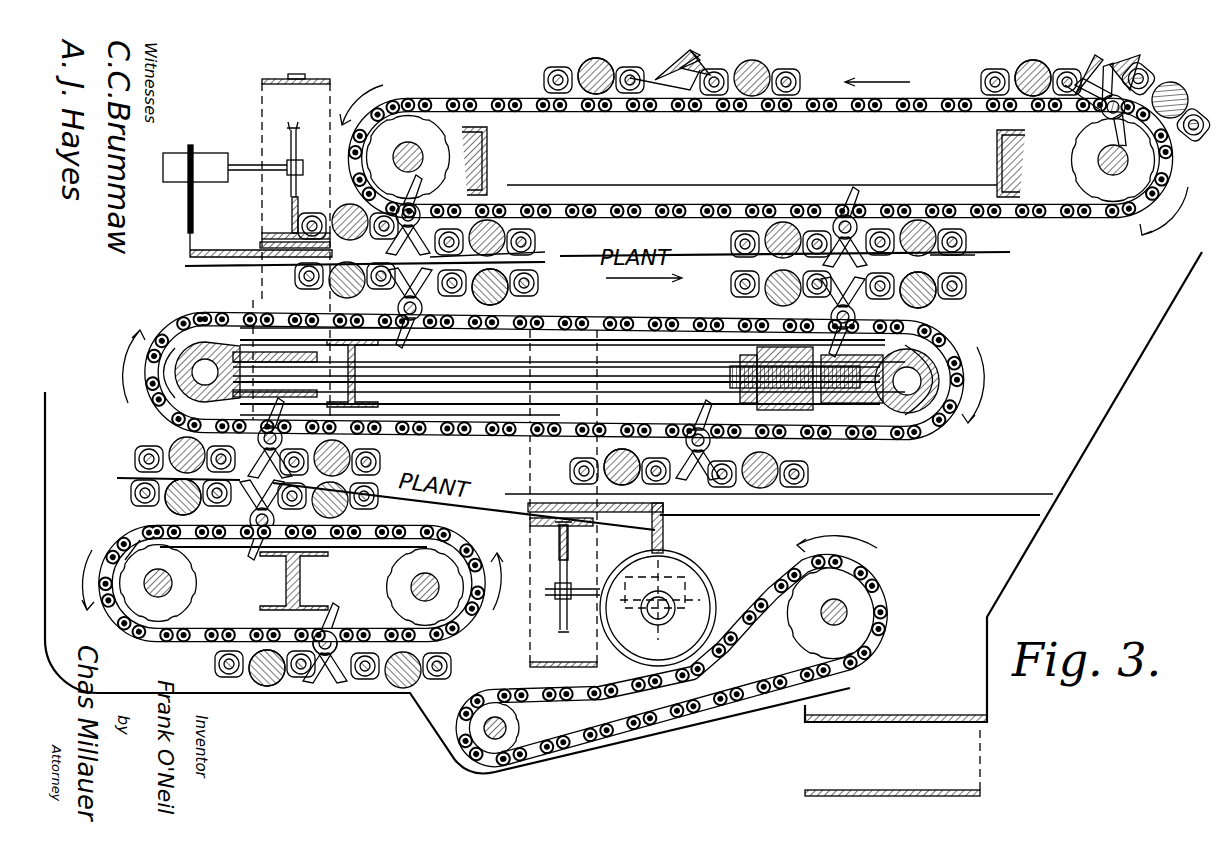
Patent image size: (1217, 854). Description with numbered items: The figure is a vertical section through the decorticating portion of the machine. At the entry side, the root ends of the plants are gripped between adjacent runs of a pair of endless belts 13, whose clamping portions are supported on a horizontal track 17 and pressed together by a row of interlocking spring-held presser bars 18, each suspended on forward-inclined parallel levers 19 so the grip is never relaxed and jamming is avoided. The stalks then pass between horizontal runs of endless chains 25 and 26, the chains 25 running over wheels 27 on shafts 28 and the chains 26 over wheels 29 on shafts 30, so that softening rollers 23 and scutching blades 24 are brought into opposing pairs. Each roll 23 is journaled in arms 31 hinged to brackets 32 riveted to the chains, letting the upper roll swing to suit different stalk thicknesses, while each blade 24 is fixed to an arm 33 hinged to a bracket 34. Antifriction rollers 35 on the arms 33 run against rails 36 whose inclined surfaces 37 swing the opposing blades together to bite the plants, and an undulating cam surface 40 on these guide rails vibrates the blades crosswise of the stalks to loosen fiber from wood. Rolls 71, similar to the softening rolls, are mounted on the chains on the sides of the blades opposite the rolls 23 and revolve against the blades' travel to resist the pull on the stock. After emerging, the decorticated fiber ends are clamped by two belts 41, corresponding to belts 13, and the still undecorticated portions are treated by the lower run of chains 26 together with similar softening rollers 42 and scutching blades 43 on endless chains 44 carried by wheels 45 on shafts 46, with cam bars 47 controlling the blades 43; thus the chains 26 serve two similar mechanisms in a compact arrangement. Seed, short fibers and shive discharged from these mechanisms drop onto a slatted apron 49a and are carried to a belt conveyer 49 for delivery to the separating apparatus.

The endless belts 13 is at (285, 256).
The horizontal track 17 is at (215, 258).
The bars 18 is at (290, 232).
The parallel levers 19 is at (288, 142).
The softening rollers 23 is at (578, 62).
The scutching blades 24 is at (668, 70).
The endless chains 25 is at (480, 103).
The endless chains 26 is at (880, 440).
The wheels 27 is at (400, 135).
The shafts 28 is at (488, 150).
The wheels 29 is at (185, 380).
The shafts 30 is at (185, 350).
The arms 31 is at (540, 252).
The brackets 32 is at (978, 250).
The arm 33 is at (670, 90).
The bracket 34 is at (625, 95).
The antifriction rollers 35 is at (440, 205).
The rails 36 is at (672, 400).
The inclined surfaces 37 is at (262, 328).
The undulating cam surface 40 is at (632, 335).
The belts 41 is at (545, 503).
The softening rollers 42 is at (165, 500).
The scutching blades 43 is at (322, 685).
The endless chains 44 is at (190, 640).
The wheels 45 is at (140, 610).
The shafts 46 is at (175, 583).
The cam bars 47 is at (355, 548).
The belt conveyer 49 is at (905, 714).
The slatted apron 49a is at (680, 715).
The rolls 71 is at (765, 60).